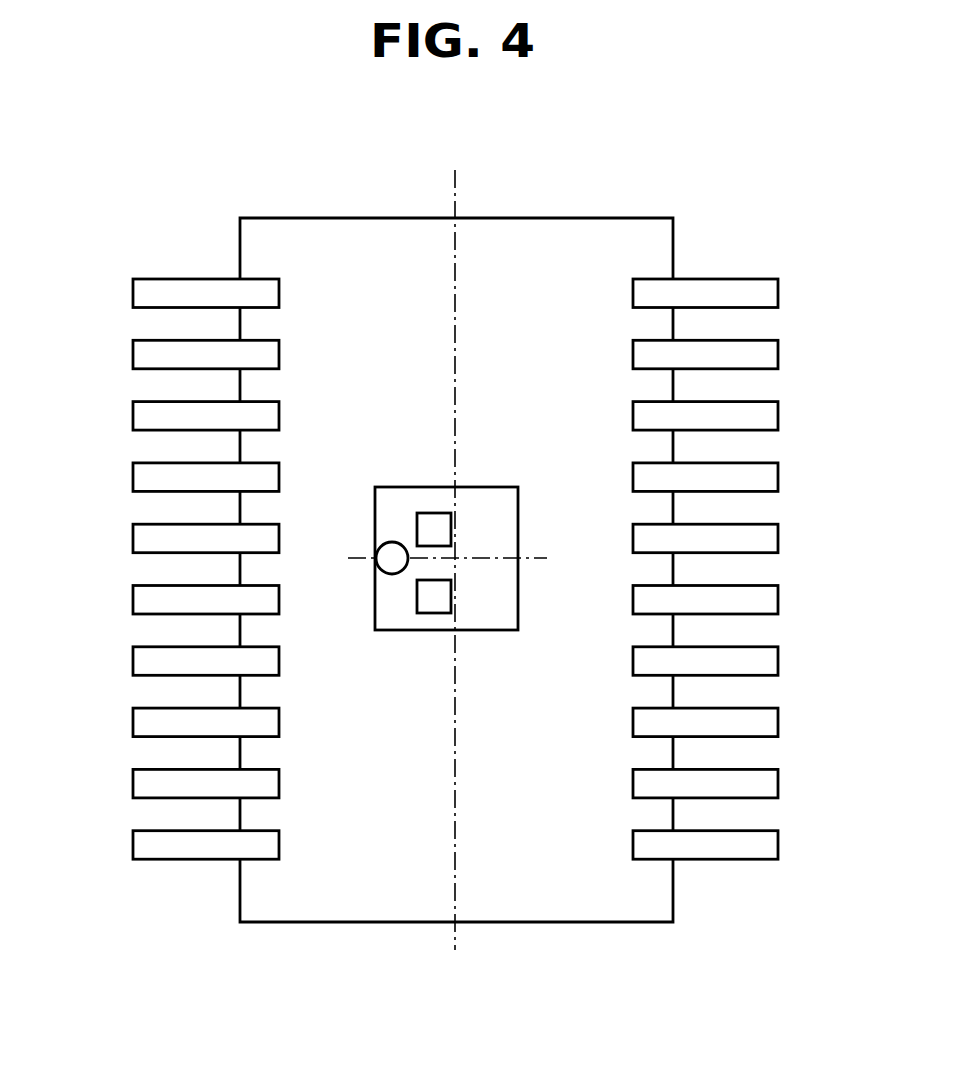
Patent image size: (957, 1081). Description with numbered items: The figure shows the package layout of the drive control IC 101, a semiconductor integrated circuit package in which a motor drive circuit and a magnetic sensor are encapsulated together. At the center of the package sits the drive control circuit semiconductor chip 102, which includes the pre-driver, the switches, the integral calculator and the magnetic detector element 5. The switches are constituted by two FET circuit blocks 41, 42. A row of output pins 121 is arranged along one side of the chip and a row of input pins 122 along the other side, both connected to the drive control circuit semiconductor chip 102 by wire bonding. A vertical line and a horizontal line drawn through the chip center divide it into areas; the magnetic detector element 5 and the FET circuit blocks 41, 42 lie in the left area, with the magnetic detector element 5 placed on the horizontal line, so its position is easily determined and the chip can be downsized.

The drive control IC 101 is at (337, 228).
The drive control circuit semiconductor chip 102 is at (495, 487).
The row of output pins 121 is at (113, 264).
The row of input pins 122 is at (803, 262).
The FET circuit block 41 is at (437, 512).
The FET circuit block 42 is at (421, 614).
The magnetic detector element 5 is at (377, 548).